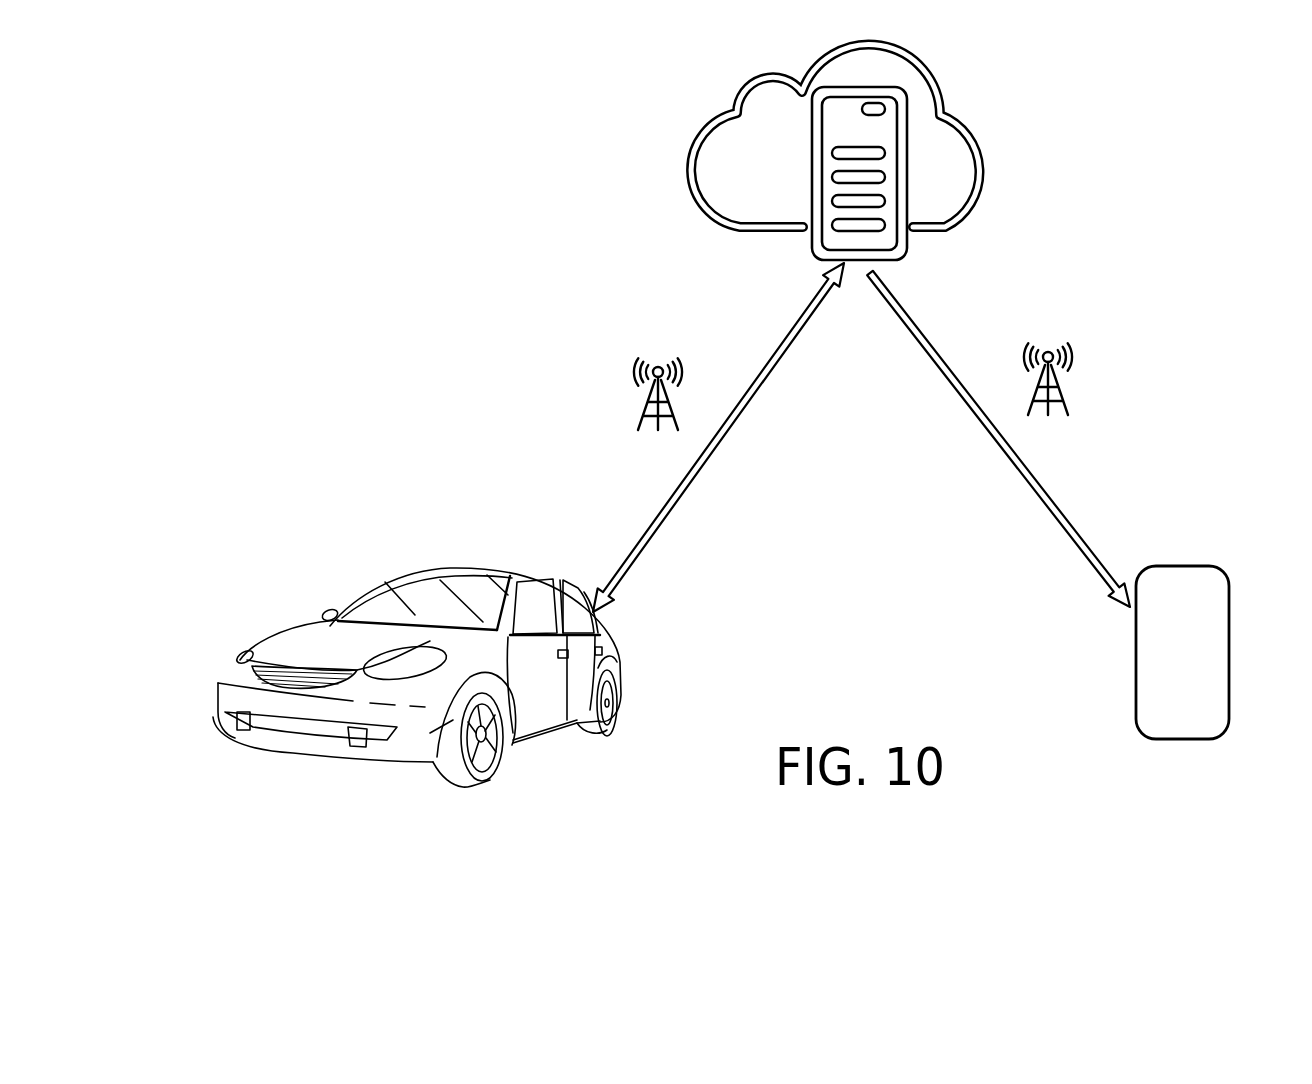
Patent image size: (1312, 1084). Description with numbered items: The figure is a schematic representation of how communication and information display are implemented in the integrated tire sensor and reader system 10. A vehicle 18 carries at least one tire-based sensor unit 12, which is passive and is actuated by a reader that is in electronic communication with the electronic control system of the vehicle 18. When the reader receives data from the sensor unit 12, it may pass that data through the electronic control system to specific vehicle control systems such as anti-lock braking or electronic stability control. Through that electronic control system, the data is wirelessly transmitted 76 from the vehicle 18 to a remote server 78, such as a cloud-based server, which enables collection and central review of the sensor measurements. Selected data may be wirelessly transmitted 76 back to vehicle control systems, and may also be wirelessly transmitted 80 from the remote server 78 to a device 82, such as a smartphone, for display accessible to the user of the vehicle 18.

The integrated tire sensor and reader system 10 is at (1188, 136).
The tire-based sensor unit 12 is at (512, 768).
The vehicle 18 is at (200, 720).
The wireless transmission 76 is at (670, 494).
The remote server 78 is at (771, 236).
The wireless transmission 80 is at (1040, 481).
The device 82 is at (1205, 662).